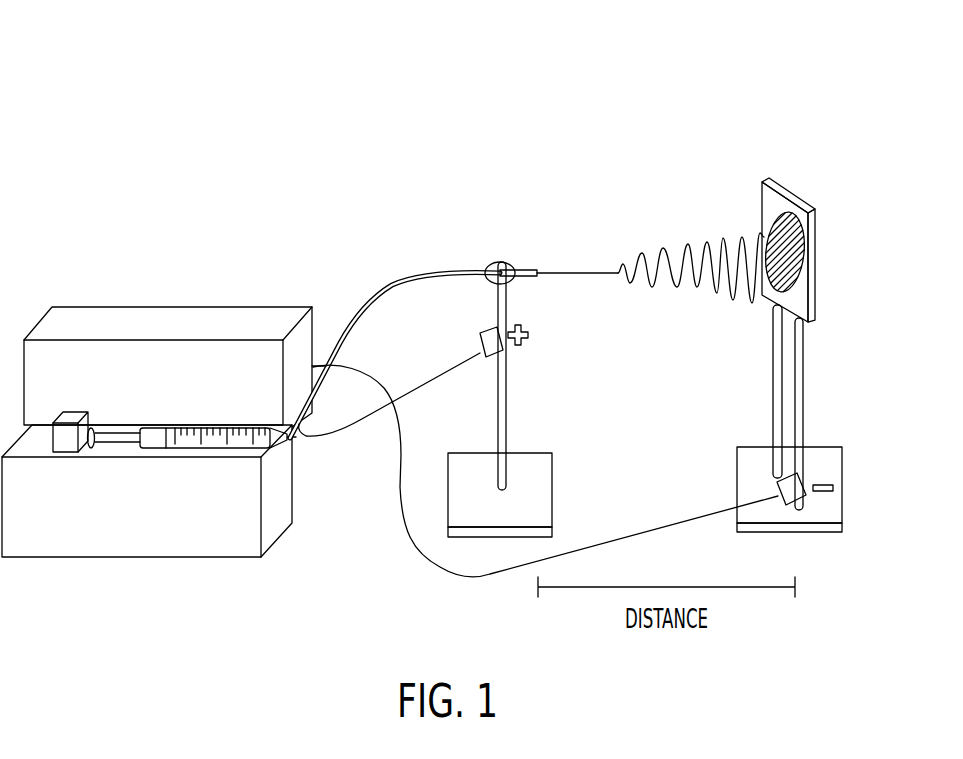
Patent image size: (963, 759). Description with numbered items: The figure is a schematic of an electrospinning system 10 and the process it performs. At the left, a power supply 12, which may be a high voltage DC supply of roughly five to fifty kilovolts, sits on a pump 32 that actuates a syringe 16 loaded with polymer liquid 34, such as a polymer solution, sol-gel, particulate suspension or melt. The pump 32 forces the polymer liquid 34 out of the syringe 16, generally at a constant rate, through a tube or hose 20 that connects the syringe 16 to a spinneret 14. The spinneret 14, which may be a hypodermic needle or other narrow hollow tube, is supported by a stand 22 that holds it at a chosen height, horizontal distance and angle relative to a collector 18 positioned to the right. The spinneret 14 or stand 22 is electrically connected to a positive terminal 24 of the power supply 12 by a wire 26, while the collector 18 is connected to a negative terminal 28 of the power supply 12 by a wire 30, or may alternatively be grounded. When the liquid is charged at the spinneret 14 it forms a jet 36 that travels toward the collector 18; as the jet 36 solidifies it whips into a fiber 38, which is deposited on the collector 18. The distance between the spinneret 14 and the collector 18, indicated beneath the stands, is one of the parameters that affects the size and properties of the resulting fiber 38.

The electrospinning system 10 is at (57, 83).
The power supply 12 is at (143, 317).
The spinneret 14 is at (523, 266).
The syringe 16 is at (188, 461).
The collector 18 is at (793, 197).
The tube or hose 20 is at (398, 283).
The stand 22 is at (553, 495).
The positive terminal 24 is at (303, 425).
The wire 26 is at (358, 427).
The negative terminal 28 is at (312, 366).
The wire 30 is at (667, 537).
The pump 32 is at (73, 445).
The polymer liquid 34 is at (207, 445).
The jet 36 is at (577, 270).
The fiber 38 is at (722, 241).